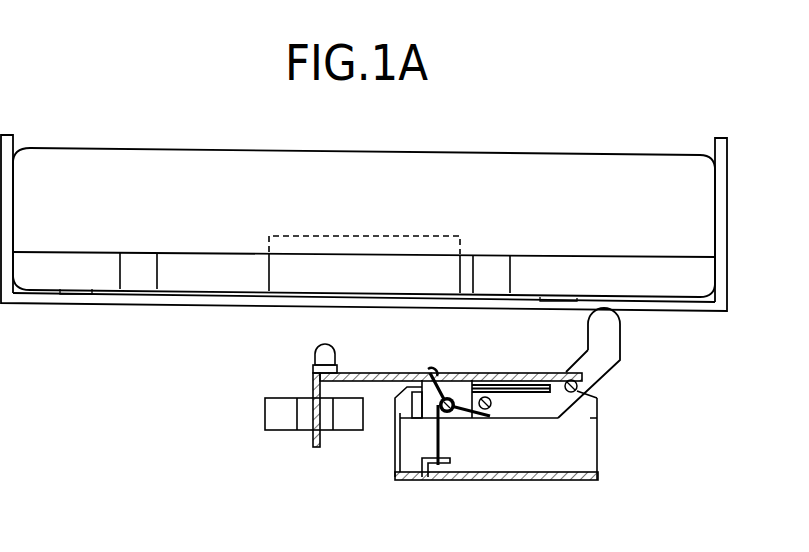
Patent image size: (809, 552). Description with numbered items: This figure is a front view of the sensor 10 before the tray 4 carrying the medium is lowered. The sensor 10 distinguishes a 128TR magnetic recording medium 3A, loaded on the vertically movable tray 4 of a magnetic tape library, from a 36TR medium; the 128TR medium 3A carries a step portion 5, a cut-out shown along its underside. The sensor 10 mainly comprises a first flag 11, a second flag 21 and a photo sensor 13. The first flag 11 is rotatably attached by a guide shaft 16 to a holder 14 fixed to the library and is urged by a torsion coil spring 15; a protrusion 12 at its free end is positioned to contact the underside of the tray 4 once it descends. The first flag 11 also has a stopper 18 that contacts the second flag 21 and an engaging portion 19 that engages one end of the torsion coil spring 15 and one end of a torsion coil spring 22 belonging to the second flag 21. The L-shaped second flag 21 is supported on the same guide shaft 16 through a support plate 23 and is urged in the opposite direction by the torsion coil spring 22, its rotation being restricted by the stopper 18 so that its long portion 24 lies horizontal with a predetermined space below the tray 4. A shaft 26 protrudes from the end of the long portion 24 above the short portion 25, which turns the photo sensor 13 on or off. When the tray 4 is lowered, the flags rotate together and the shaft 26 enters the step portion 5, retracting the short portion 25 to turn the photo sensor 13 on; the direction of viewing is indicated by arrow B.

The 128TR magnetic recording medium 3A is at (245, 177).
The tray 4 is at (723, 135).
The step portion 5 is at (457, 273).
The sensor 10 is at (666, 414).
The first flag 11 is at (612, 347).
The protrusion 12 is at (600, 310).
The photo sensor 13 is at (263, 408).
The holder 14 is at (590, 488).
The torsion coil spring 15 is at (442, 440).
The guide shaft 16 is at (440, 405).
The stopper 18 is at (597, 418).
The engaging portion 19 is at (491, 404).
The second flag 21 is at (471, 369).
The torsion coil spring 22 is at (445, 372).
The support plate 23 is at (420, 399).
The long portion 24 is at (538, 372).
The short portion 25 is at (312, 438).
The shaft 26 is at (327, 344).
The direction B is at (716, 437).